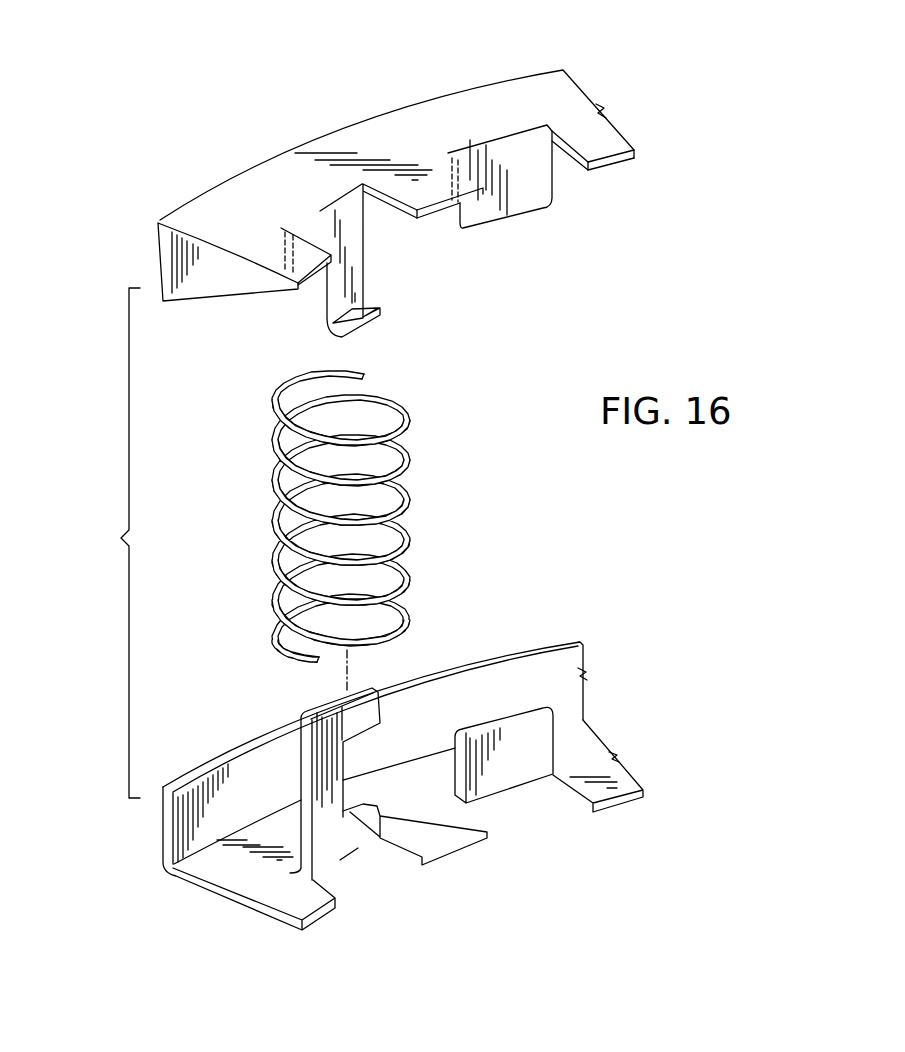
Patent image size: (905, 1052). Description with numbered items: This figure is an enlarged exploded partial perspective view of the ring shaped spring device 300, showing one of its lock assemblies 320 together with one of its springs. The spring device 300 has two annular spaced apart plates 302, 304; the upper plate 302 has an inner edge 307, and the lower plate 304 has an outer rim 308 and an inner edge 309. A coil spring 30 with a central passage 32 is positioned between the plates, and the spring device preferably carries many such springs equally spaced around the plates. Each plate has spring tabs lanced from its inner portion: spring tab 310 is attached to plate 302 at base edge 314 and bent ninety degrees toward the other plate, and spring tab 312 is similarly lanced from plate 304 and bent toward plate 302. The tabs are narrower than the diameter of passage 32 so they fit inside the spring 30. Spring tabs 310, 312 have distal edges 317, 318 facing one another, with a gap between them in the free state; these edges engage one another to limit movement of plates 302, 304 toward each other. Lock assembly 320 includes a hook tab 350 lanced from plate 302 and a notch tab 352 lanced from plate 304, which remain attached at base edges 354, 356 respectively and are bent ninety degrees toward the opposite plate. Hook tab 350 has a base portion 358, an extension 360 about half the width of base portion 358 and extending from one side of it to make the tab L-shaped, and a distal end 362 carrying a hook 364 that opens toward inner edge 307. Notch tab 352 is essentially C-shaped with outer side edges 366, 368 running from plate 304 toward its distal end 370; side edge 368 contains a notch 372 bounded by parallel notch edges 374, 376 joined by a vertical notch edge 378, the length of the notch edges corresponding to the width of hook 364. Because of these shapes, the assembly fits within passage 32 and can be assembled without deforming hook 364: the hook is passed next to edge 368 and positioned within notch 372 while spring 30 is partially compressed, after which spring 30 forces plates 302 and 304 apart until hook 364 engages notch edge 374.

The spring 30 is at (407, 465).
The passage 32 is at (360, 423).
The spring device 300 is at (597, 72).
The plate 302 is at (616, 126).
The plate 304 is at (587, 693).
The inner edge 307 is at (432, 210).
The outer rim 308 is at (163, 815).
The inner edge 309 is at (450, 851).
The spring tab 310 is at (540, 183).
The spring tab 312 is at (537, 743).
The base edge 314 is at (495, 147).
The distal edge 317 is at (527, 213).
The distal edge 318 is at (502, 722).
The lock assembly 320 is at (133, 218).
The hook tab 350 is at (357, 253).
The notch tab 352 is at (323, 760).
The base edge 354 is at (320, 208).
The base edge 356 is at (340, 862).
The base portion 358 is at (338, 232).
The extension 360 is at (357, 285).
The distal end 362 is at (316, 336).
The hook 364 is at (378, 317).
The outer side edge 366 is at (307, 803).
The outer side edge 368 is at (380, 698).
The distal end 370 is at (323, 708).
The notch 372 is at (357, 757).
The notch edge 374 is at (370, 730).
The notch edge 376 is at (357, 816).
The vertical notch edge 378 is at (347, 792).